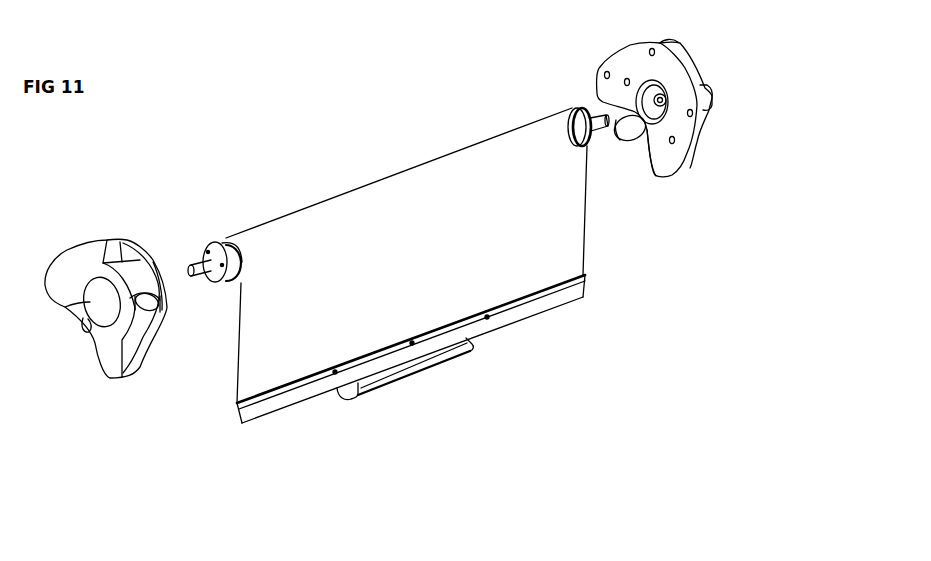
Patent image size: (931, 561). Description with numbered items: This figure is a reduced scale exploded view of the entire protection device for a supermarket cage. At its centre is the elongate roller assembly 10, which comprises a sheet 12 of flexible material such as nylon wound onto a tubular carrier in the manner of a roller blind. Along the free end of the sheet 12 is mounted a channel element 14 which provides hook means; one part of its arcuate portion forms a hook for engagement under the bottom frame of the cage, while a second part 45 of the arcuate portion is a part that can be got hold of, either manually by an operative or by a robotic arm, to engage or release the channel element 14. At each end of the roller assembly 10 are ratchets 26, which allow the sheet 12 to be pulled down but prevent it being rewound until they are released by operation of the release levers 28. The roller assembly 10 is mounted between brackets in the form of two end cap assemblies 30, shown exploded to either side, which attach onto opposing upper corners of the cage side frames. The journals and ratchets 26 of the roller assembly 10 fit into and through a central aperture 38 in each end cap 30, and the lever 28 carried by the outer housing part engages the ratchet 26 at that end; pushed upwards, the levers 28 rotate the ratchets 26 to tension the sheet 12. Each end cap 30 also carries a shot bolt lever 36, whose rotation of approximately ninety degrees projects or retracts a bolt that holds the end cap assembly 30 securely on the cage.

The roller assembly 10 is at (358, 181).
The sheet 12 is at (233, 350).
The channel element 14 is at (503, 330).
The ratchets 26 is at (210, 245).
The release levers 28 is at (142, 302).
The end cap assemblies 30 is at (95, 240).
The shot bolt lever 36 is at (630, 143).
The central aperture 38 is at (77, 307).
The second part of the arcuate portion 45 is at (415, 373).